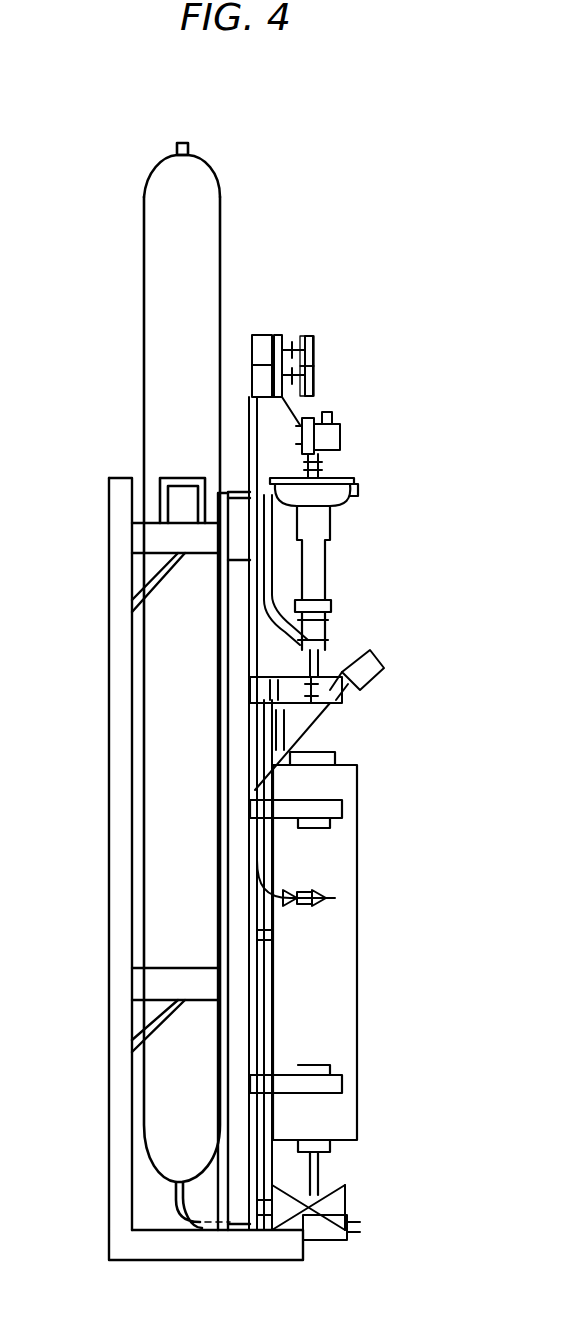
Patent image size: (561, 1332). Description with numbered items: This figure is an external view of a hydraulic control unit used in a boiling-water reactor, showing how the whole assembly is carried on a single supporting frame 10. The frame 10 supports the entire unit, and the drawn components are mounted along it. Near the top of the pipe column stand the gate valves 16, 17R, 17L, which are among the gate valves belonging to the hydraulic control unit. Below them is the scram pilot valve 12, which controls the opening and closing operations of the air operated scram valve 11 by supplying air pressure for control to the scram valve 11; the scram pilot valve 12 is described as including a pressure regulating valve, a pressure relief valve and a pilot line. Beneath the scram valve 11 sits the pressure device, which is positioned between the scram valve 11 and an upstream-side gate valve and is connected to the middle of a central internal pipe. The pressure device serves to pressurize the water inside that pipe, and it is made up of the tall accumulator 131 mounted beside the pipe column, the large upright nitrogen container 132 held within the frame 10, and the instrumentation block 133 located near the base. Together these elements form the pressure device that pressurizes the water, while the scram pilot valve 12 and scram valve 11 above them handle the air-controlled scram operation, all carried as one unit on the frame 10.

The frame 10 is at (117, 745).
The air operated scram valve 11 is at (352, 492).
The scram pilot valve 12 is at (340, 430).
The gate valve 16 is at (315, 352).
The gate valve 17R is at (307, 351).
The gate valve 17L is at (307, 381).
The accumulator 131 is at (355, 970).
The nitrogen container 132 is at (156, 257).
The instrumentation block 133 is at (347, 1215).